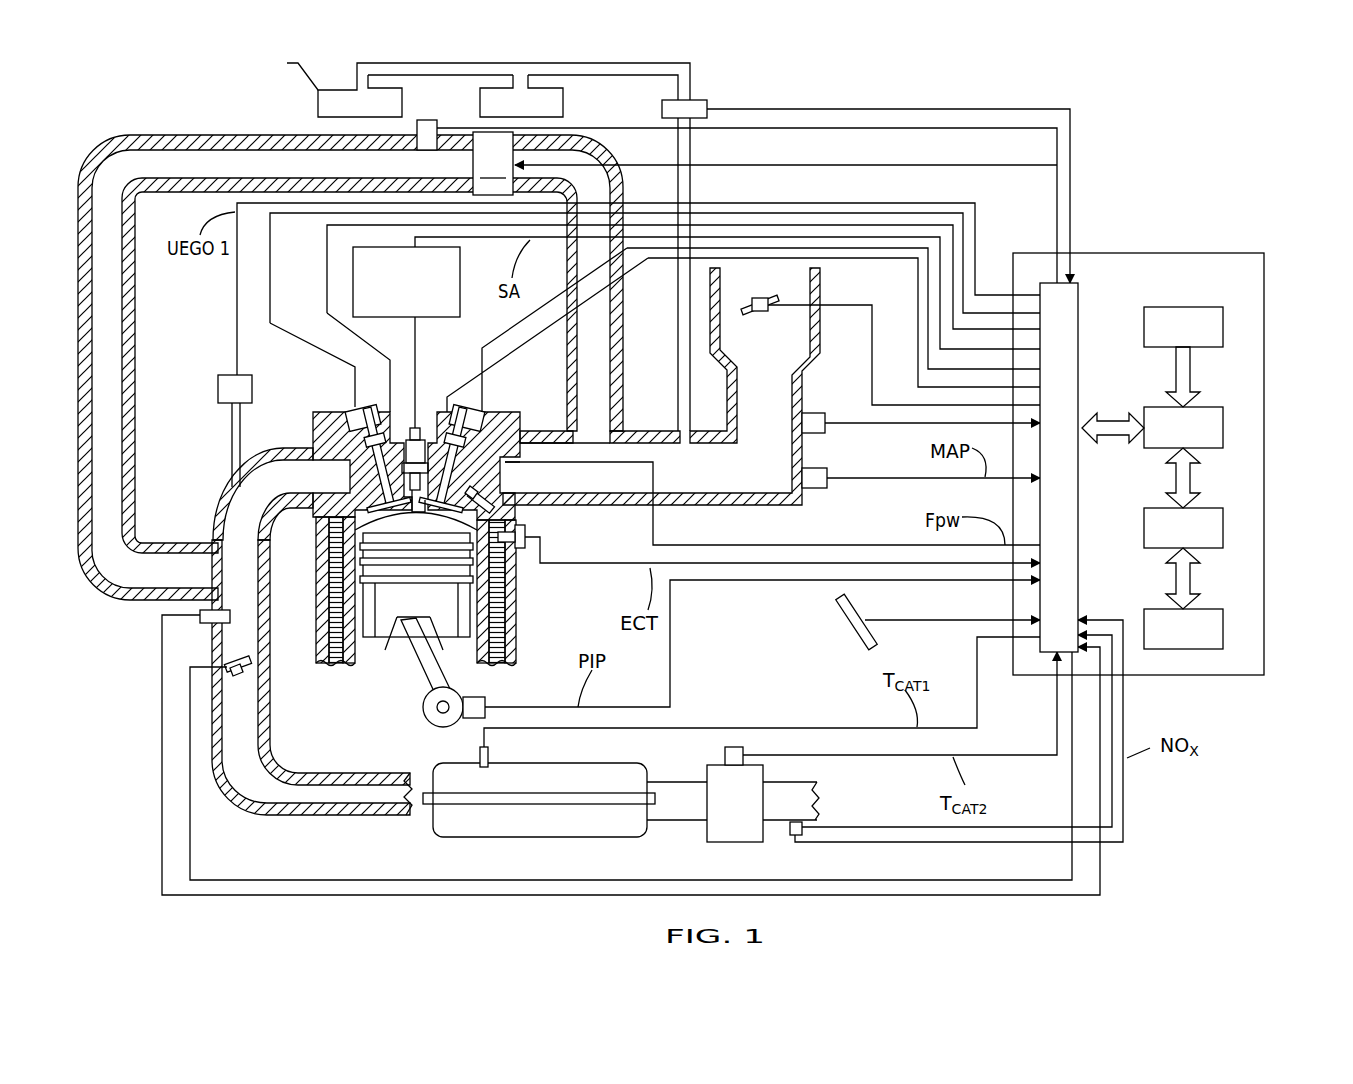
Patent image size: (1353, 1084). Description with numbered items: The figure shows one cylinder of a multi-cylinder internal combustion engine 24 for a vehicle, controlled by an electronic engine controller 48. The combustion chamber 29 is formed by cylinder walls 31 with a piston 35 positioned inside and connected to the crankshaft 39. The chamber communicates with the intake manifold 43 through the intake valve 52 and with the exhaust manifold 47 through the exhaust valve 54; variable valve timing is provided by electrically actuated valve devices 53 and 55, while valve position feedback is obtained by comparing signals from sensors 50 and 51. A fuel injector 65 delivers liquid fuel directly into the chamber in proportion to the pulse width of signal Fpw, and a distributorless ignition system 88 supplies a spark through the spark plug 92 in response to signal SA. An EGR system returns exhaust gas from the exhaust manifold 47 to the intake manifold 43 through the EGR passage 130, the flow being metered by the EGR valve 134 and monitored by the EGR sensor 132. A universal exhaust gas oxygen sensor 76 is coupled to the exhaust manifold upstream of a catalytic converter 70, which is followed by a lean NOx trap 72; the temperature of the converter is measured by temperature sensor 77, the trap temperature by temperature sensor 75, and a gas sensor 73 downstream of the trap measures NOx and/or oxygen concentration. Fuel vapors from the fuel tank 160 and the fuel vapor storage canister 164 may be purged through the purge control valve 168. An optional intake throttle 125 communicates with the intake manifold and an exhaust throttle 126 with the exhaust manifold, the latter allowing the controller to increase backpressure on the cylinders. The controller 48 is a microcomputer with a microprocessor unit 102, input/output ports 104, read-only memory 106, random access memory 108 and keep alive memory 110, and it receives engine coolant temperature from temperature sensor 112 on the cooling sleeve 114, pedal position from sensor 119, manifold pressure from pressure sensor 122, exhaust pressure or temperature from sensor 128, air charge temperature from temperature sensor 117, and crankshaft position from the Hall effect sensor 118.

The internal combustion engine 24 is at (308, 405).
The combustion chamber 29 is at (335, 557).
The cylinder walls 31 is at (353, 650).
The piston 35 is at (398, 613).
The crankshaft 39 is at (423, 707).
The intake manifold 43 is at (714, 485).
The exhaust manifold 47 is at (240, 513).
The electronic engine controller 48 is at (1168, 430).
The exhaust valve position sensor 50 is at (377, 398).
The intake valve position sensor 51 is at (443, 414).
The intake valve 52 is at (513, 412).
The electrically actuated valve actuator 53 is at (353, 407).
The exhaust valve 54 is at (373, 495).
The electrically actuated valve actuator 55 is at (480, 402).
The fuel injector 65 is at (490, 492).
The catalytic converter 70 is at (562, 765).
The lean NOx trap 72 is at (707, 828).
The gas sensor 73 is at (787, 837).
The temperature sensor 75 is at (723, 755).
The Universal Exhaust Gas Oxygen sensor 76 is at (222, 372).
The temperature sensor 77 is at (478, 752).
The distributorless ignition system 88 is at (367, 247).
The spark plug 92 is at (405, 422).
The microprocessor unit 102 is at (1226, 427).
The input/output ports 104 is at (1083, 352).
The read-only memory 106 is at (1226, 327).
The random access memory 108 is at (1226, 528).
The keep alive memory 110 is at (1226, 630).
The temperature sensor 112 is at (527, 537).
The cooling sleeve 114 is at (336, 674).
The temperature sensor 117 is at (828, 437).
The Hall effect sensor 118 is at (487, 698).
The pedal position sensor 119 is at (840, 634).
The pressure sensor 122 is at (813, 490).
The intake throttle 125 is at (794, 289).
The exhaust throttle 126 is at (245, 656).
The exhaust sensor 128 is at (225, 610).
The EGR passage 130 is at (245, 160).
The EGR sensor 132 is at (423, 152).
The EGR valve 134 is at (493, 163).
The fuel tank 160 is at (402, 108).
The fuel vapor storage canister 164 is at (565, 108).
The purge control valve 168 is at (712, 105).